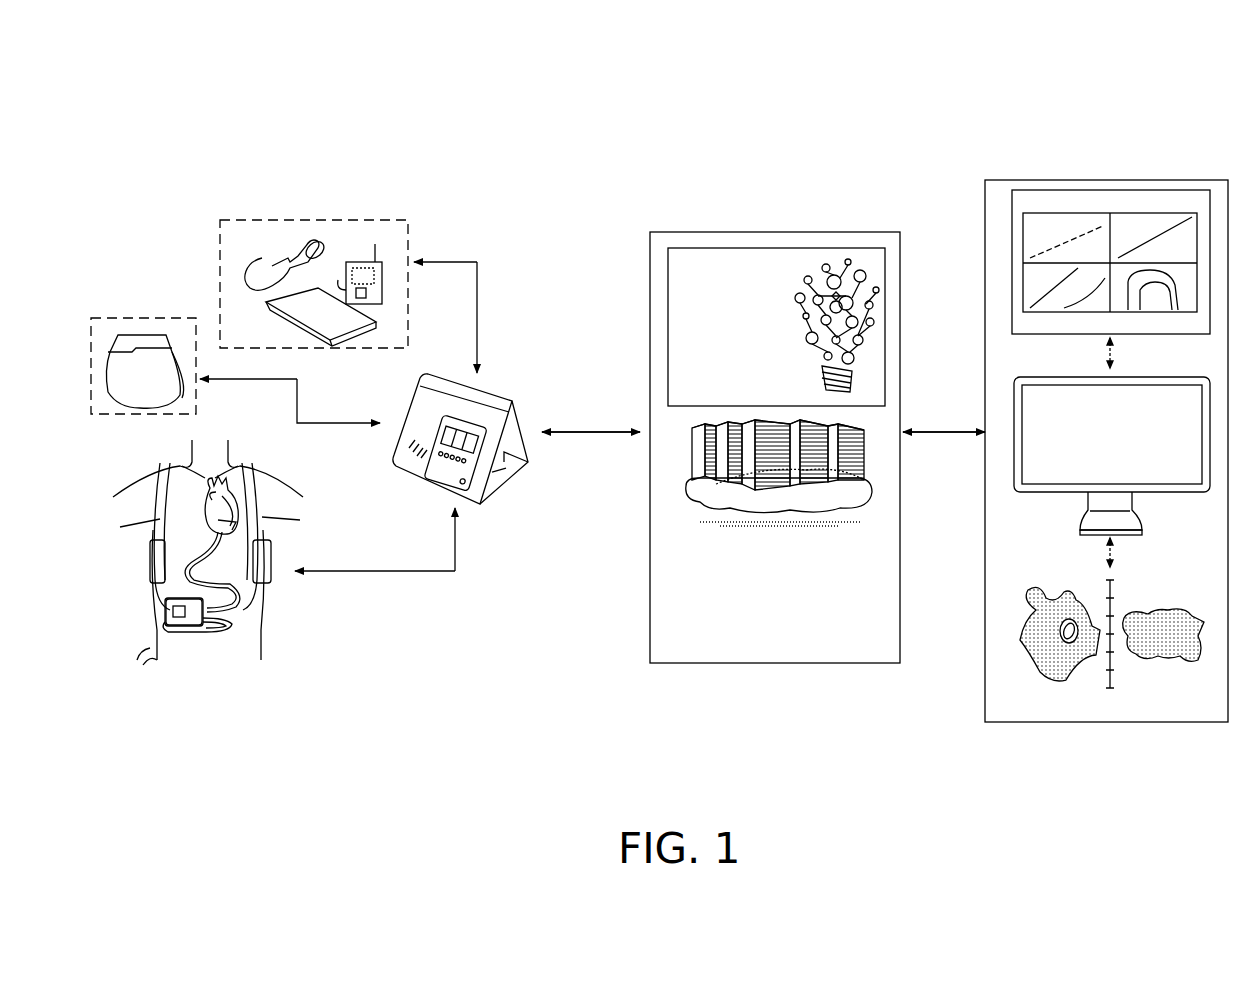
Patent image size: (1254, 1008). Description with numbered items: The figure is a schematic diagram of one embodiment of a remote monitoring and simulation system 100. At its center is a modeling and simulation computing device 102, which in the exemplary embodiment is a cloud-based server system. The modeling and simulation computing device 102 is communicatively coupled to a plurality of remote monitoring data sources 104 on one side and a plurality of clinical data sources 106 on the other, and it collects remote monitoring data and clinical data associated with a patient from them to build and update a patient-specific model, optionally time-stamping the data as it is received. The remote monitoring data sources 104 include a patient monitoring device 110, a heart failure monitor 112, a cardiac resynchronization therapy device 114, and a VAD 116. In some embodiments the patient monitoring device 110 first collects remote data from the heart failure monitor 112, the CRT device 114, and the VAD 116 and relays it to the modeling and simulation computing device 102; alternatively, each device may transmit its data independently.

The remote monitoring and simulation system 100 is at (622, 126).
The modeling and simulation computing device 102 is at (760, 231).
The remote monitoring data sources 104 is at (326, 652).
The clinical data sources 106 is at (1108, 178).
The patient monitoring device 110 is at (492, 500).
The heart failure monitor 112 is at (322, 220).
The cardiac resynchronization therapy (CRT) device 114 is at (130, 318).
The VAD 116 is at (162, 642).